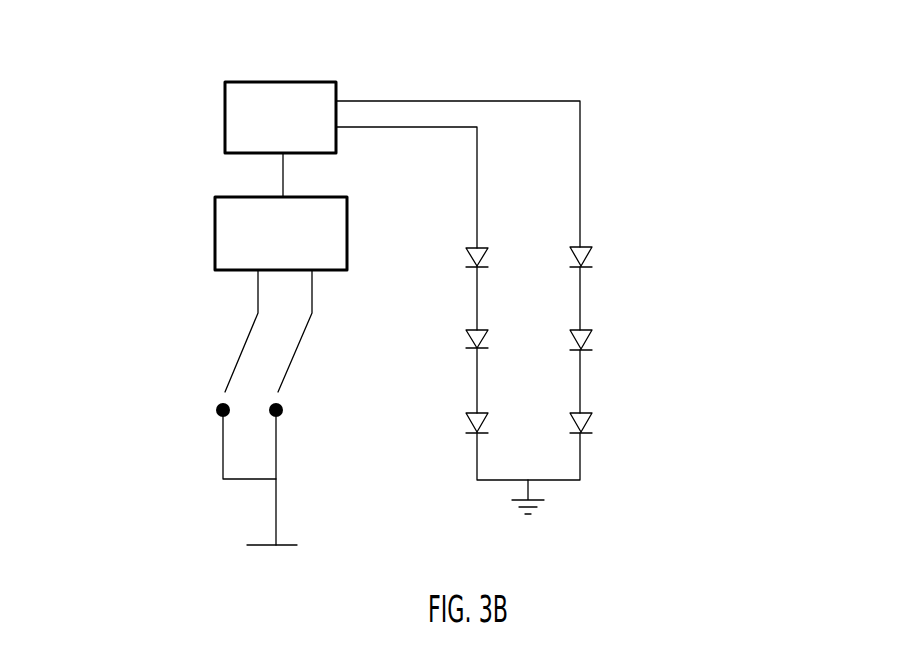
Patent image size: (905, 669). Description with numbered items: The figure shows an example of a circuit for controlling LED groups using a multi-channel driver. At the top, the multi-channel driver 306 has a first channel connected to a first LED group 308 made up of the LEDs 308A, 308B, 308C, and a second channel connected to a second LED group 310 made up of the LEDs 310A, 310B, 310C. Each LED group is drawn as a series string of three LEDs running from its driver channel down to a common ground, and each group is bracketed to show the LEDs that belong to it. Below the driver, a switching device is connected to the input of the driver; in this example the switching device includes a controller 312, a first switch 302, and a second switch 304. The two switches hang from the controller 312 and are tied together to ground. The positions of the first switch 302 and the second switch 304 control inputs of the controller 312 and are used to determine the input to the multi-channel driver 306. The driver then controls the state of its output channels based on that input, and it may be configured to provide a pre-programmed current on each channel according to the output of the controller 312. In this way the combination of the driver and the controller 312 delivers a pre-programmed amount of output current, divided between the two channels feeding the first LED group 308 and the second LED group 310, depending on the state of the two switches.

The first switch 302 is at (170, 381).
The second switch 304 is at (290, 433).
The multi-channel driver 306 is at (266, 81).
The first LED group 308 is at (397, 230).
The LED 308A is at (460, 260).
The LED 308B is at (460, 345).
The LED 308C is at (460, 425).
The second LED group 310 is at (700, 230).
The LED 310A is at (605, 268).
The LED 310B is at (605, 350).
The LED 310C is at (605, 432).
The controller 312 is at (214, 222).